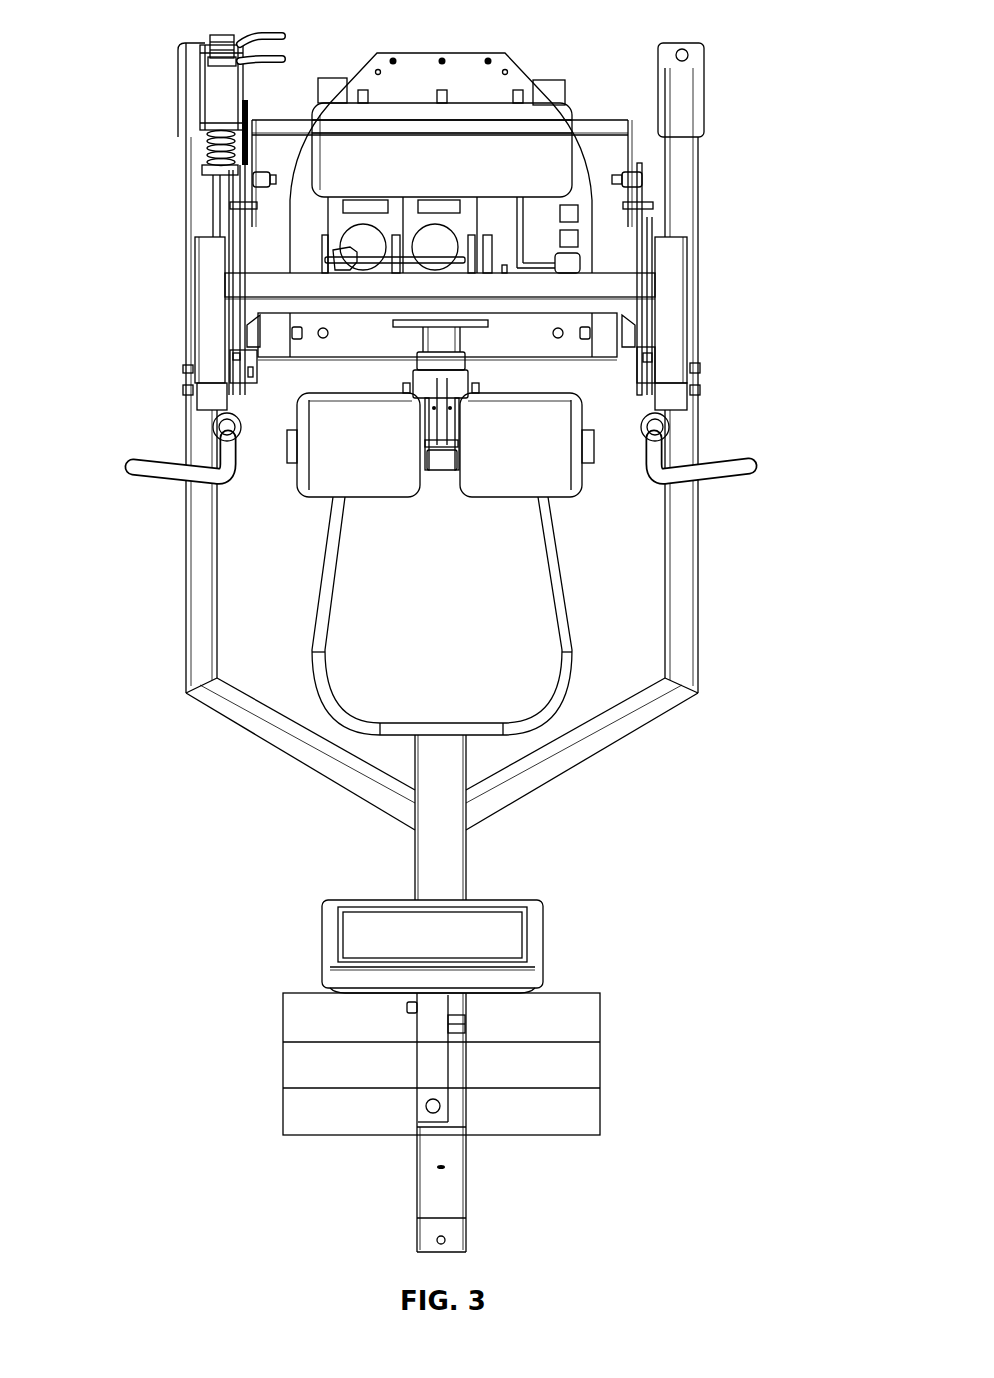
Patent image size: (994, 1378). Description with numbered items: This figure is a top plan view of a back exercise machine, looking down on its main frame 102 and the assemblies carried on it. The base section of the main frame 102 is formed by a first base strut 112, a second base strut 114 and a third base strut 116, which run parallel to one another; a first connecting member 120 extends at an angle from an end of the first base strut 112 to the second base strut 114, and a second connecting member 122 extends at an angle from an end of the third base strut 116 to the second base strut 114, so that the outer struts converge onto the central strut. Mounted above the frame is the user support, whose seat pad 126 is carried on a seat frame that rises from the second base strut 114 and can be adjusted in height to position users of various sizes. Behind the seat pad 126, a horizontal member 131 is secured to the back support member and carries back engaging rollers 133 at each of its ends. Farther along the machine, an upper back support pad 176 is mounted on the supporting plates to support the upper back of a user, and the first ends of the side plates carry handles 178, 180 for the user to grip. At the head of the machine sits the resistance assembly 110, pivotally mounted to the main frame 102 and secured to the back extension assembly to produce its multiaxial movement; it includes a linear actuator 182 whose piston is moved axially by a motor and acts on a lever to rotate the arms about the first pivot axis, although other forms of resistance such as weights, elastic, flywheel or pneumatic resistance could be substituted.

The main frame 102 is at (172, 676).
The resistance assembly 110 is at (487, 42).
The first base strut 112 is at (205, 623).
The second base strut 114 is at (447, 872).
The third base strut 116 is at (683, 640).
The first connecting member 120 is at (300, 745).
The second connecting member 122 is at (580, 745).
The seat pad 126 is at (465, 628).
The horizontal member 131 is at (442, 465).
The back engaging rollers 133 is at (330, 490).
The upper back support pad 176 is at (555, 148).
The handle 178 is at (147, 463).
The handle 180 is at (737, 458).
The linear actuator 182 is at (222, 104).